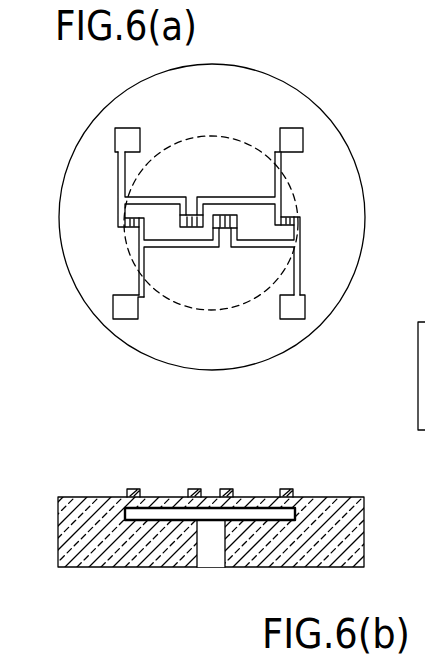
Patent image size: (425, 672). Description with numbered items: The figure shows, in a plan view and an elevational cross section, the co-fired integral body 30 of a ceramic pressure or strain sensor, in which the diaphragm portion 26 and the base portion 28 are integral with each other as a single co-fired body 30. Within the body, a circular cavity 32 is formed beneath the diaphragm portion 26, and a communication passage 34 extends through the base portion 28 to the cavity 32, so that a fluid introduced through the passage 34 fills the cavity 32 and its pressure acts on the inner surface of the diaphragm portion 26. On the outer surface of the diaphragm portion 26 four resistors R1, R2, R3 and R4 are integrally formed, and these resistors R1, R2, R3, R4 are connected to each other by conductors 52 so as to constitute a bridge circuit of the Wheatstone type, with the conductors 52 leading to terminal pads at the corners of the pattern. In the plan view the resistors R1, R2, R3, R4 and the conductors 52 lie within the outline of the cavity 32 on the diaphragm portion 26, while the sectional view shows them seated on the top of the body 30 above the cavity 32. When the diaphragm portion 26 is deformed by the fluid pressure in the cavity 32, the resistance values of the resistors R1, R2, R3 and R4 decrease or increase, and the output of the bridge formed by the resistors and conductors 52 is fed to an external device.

In FIG. 6A, the co-fired integral body 30 is at (58, 148).
In FIG. 6B, the co-fired integral body 30 is at (211, 517).
In FIG. 6A, the diaphragm portion 26 is at (170, 155).
In FIG. 6B, the diaphragm portion 26 is at (166, 497).
In FIG. 6A, the circular cavity 32 is at (224, 136).
In FIG. 6B, the circular cavity 32 is at (125, 517).
In FIG. 6A, the conductors 52 is at (118, 168).
In FIG. 6A, the resistor R1 is at (131, 229).
In FIG. 6B, the resistor R1 is at (128, 489).
In FIG. 6A, the resistor R2 is at (189, 214).
In FIG. 6B, the resistor R2 is at (191, 489).
In FIG. 6A, the resistor R3 is at (225, 229).
In FIG. 6B, the resistor R3 is at (226, 489).
In FIG. 6A, the resistor R4 is at (287, 216).
In FIG. 6B, the resistor R4 is at (287, 489).
In FIG. 6B, the base portion 28 is at (345, 548).
In FIG. 6B, the communication passage 34 is at (210, 568).